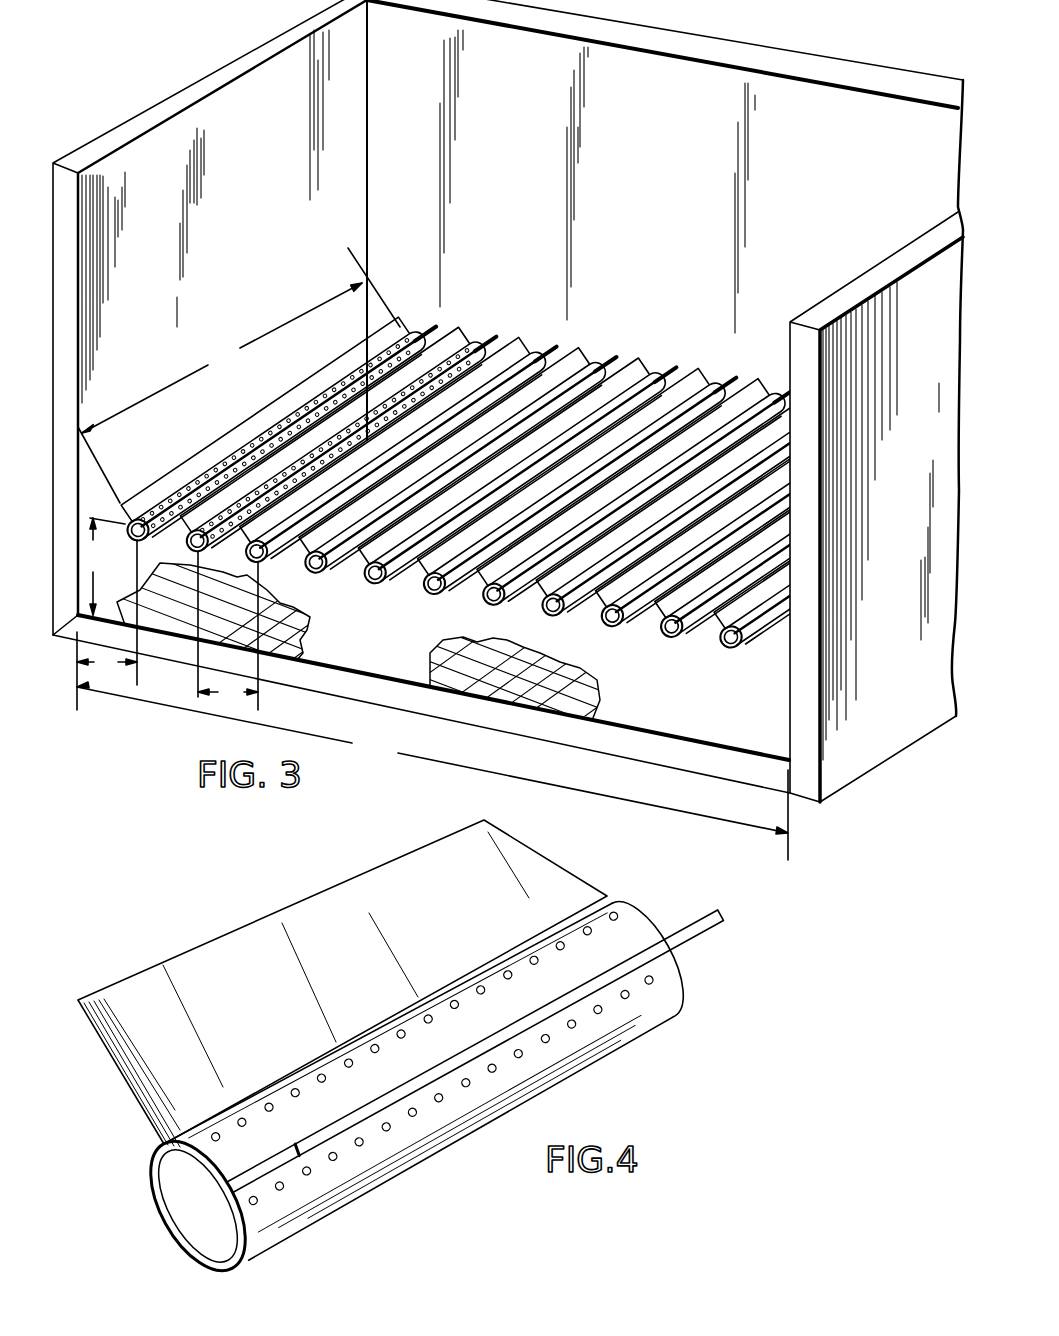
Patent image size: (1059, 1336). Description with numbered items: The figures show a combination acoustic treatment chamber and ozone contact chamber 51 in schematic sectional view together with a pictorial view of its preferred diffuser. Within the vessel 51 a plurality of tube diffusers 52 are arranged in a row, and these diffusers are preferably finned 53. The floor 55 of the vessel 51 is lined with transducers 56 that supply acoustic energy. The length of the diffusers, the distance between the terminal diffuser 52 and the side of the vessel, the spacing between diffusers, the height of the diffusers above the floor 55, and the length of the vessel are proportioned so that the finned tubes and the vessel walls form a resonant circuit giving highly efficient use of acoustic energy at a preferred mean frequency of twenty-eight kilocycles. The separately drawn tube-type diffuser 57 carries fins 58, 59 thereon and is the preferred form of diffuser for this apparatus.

In FIG. 3, the combination acoustic treatment chamber and ozone contact chamber 51 is at (250, 192).
In FIG. 3, the tube diffuser 52 is at (295, 418).
In FIG. 3, the fin 53 is at (199, 453).
In FIG. 3, the floor 55 is at (173, 661).
In FIG. 3, the transducer 56 is at (227, 624).
In FIG. 4, the tube-type diffuser 57 is at (439, 1125).
In FIG. 4, the fin 58 is at (192, 955).
In FIG. 4, the fin 59 is at (302, 1150).